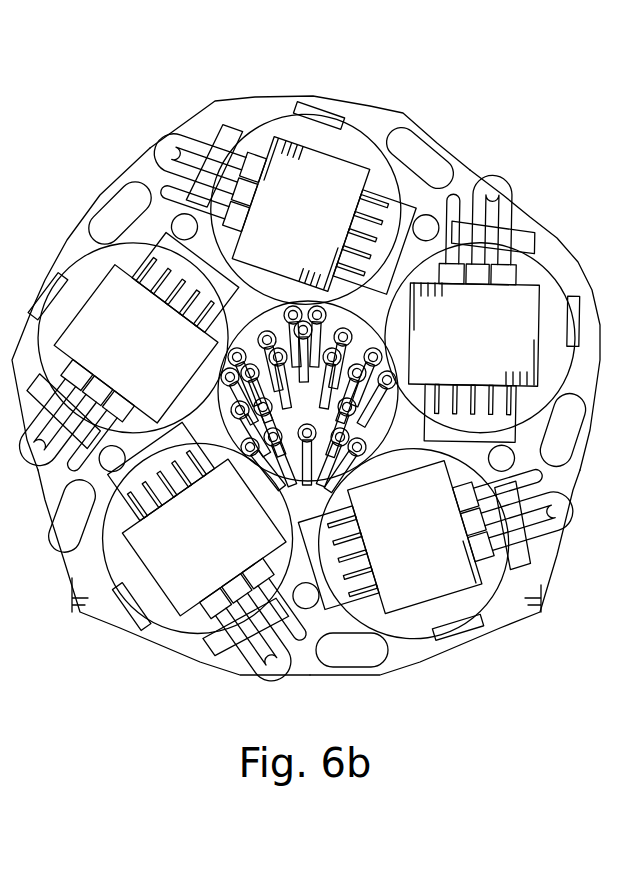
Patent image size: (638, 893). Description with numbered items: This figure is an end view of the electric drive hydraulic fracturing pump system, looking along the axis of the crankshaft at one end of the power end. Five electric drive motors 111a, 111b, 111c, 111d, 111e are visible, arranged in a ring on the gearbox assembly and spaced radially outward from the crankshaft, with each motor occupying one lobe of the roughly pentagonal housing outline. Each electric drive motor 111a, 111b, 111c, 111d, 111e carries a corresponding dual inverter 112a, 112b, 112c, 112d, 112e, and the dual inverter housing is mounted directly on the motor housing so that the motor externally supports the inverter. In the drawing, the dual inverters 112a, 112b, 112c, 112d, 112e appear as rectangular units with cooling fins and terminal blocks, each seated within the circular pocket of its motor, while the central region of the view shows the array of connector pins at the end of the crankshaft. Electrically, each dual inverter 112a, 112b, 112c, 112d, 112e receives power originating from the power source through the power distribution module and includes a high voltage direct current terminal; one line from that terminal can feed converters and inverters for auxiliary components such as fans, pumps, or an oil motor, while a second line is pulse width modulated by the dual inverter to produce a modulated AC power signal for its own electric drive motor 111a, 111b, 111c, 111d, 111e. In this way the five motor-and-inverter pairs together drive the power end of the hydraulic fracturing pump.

The electric drive motor 111a is at (283, 117).
The electric drive motor 111b is at (540, 263).
The electric drive motor 111c is at (417, 637).
The electric drive motor 111d is at (193, 637).
The electric drive motor 111e is at (80, 253).
The dual inverter 112a is at (273, 232).
The dual inverter 112b is at (443, 352).
The dual inverter 112c is at (385, 552).
The dual inverter 112d is at (173, 555).
The dual inverter 112e is at (107, 358).